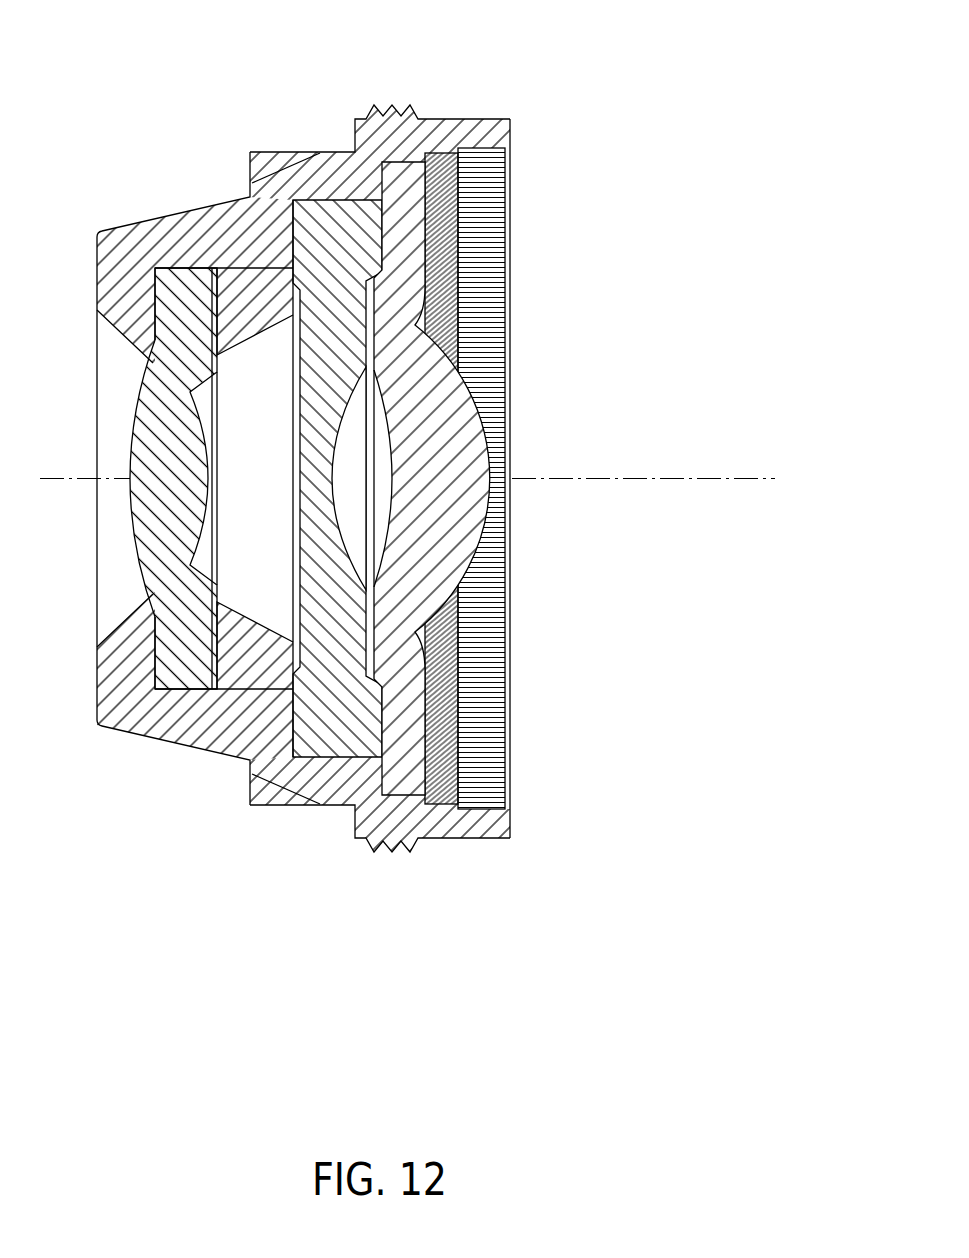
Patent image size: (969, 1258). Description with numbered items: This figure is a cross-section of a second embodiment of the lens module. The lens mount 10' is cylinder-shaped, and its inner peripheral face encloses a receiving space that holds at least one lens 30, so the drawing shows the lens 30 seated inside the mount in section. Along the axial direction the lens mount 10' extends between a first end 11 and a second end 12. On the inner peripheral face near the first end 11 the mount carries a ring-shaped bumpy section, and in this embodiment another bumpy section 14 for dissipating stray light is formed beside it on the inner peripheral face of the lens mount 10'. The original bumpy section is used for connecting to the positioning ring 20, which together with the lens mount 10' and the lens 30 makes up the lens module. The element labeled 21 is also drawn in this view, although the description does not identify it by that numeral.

The lens mount 10' is at (407, 389).
The first end 11 is at (512, 868).
The second end 12 is at (97, 757).
The bumpy section 14 is at (511, 180).
The positioning ring 20 is at (441, 150).
The filter 21 is at (511, 295).
The lens 30 is at (463, 522).